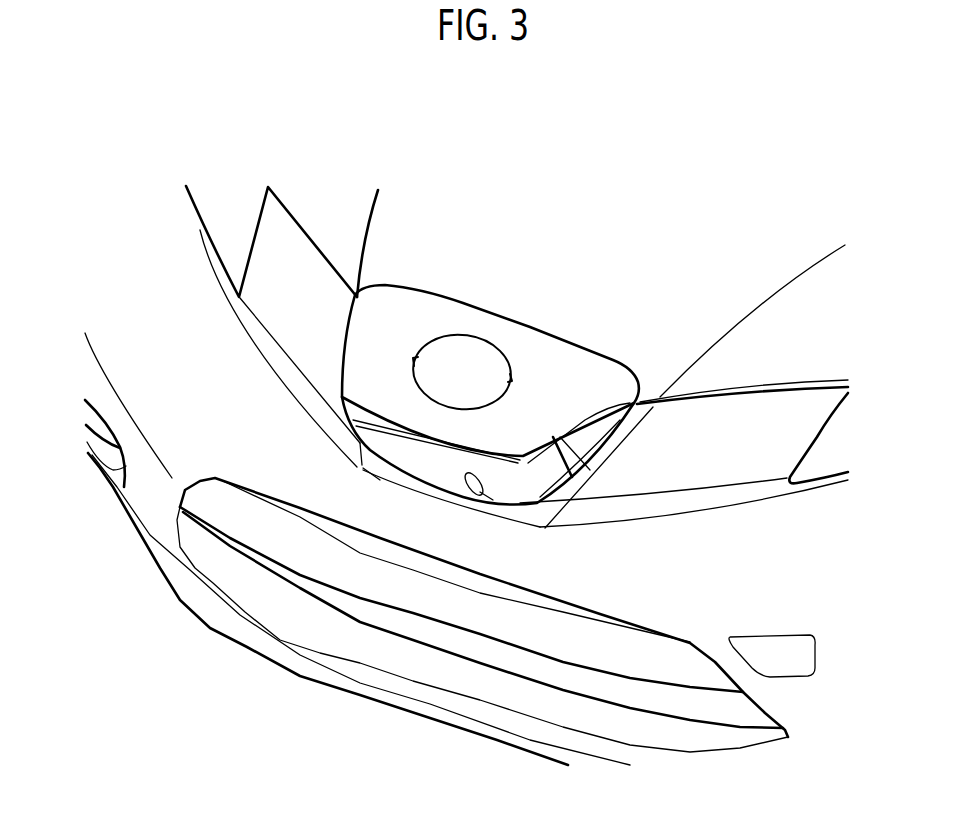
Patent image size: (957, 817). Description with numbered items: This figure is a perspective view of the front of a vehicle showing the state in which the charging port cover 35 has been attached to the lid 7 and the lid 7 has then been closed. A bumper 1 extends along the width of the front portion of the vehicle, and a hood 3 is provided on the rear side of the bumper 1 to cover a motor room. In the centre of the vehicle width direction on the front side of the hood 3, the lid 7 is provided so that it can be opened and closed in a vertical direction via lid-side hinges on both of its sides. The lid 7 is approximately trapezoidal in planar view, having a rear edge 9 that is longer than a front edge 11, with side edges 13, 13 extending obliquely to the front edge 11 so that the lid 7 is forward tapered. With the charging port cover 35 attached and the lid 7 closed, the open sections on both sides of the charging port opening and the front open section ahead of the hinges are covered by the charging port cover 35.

The bumper 1 is at (225, 455).
The hood 3 is at (420, 228).
The lid 7 is at (548, 370).
The rear edge 9 is at (475, 302).
The front edge 11 is at (431, 443).
The side edges 13 is at (343, 352).
The charging port cover 35 is at (405, 452).